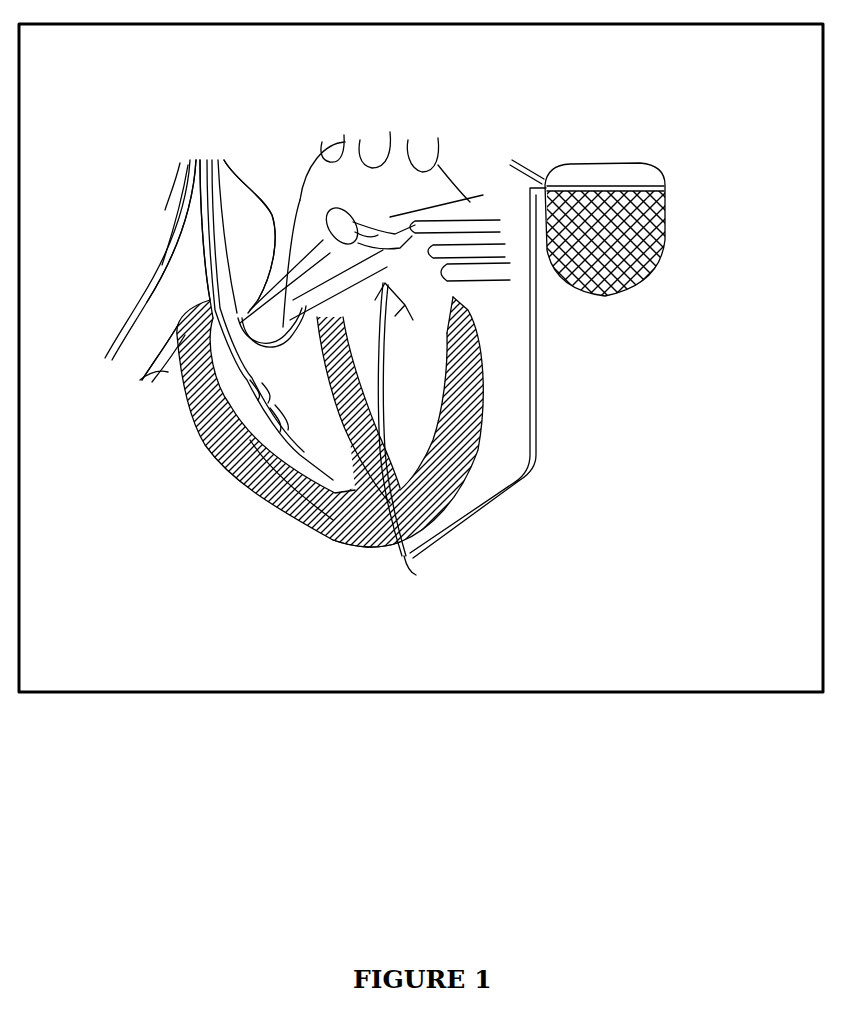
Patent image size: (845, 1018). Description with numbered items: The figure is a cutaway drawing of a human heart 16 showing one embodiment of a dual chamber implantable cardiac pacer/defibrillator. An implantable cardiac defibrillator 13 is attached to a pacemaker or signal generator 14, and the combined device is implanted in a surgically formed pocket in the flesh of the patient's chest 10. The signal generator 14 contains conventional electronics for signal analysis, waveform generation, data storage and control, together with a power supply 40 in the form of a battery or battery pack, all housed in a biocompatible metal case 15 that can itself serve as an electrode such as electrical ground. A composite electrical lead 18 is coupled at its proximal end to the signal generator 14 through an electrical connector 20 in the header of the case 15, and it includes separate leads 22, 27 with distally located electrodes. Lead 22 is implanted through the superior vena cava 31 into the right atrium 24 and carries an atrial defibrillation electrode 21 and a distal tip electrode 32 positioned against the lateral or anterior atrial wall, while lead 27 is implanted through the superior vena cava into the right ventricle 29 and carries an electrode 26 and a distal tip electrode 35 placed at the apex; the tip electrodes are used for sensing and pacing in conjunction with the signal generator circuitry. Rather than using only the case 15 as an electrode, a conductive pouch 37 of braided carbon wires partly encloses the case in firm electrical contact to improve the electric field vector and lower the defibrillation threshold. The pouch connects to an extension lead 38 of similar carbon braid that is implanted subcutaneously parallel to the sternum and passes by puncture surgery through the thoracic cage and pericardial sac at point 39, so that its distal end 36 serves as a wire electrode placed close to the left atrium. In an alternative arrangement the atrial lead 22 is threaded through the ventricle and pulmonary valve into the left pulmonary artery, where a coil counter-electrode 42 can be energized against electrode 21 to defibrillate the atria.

The patient's chest 10 is at (509, 101).
The implantable cardiac defibrillator 13 is at (626, 210).
The signal generator 14 is at (663, 200).
The metal case 15 is at (663, 243).
The patient's heart 16 is at (230, 478).
The composite electrical lead 18 is at (530, 166).
The electrical connector 20 is at (640, 170).
The electrode 21 is at (200, 270).
The lead 22 is at (195, 245).
The right atrium 24 is at (256, 255).
The electrode 26 is at (282, 420).
The lead 27 is at (265, 375).
The right ventricle 29 is at (280, 512).
The superior vena cava 31 is at (183, 190).
The distal tip electrode 32 is at (159, 358).
The distal tip electrode 35 is at (335, 545).
The distal end of lead 38 36 is at (417, 269).
The conductive pouch 37 is at (650, 270).
The extension lead 38 is at (535, 378).
The puncture point 39 is at (421, 575).
The power supply 40 is at (528, 226).
The coil counter-electrode 42 is at (396, 218).